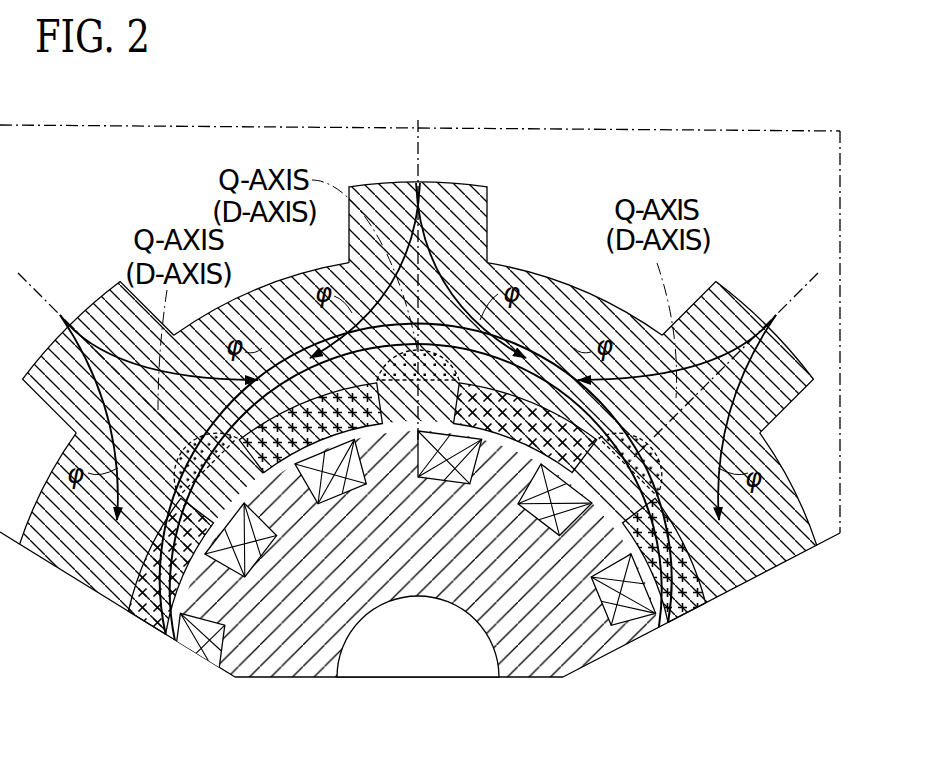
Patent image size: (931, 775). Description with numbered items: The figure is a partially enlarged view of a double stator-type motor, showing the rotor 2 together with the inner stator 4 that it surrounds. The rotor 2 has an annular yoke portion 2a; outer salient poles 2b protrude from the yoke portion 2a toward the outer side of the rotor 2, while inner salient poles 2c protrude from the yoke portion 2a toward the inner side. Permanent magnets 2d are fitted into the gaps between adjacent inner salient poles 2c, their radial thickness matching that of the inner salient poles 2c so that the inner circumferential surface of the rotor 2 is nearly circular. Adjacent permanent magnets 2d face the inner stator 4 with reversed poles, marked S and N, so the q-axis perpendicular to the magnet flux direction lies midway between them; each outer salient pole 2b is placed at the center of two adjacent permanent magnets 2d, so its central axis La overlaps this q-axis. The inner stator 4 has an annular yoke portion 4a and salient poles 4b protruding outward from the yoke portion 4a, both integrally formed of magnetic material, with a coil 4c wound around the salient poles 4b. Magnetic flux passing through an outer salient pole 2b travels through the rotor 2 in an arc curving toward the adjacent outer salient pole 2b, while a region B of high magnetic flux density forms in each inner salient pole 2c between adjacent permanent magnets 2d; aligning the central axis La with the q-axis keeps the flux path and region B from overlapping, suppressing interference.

The rotor 2 is at (537, 271).
The yoke portion 2a is at (274, 320).
The outer salient pole 2b is at (462, 200).
The inner salient pole 2c is at (246, 442).
The permanent magnet 2d is at (293, 407).
The inner stator 4 is at (614, 655).
The yoke portion 4a is at (418, 597).
The salient pole 4b is at (362, 468).
The coil 4c is at (432, 473).
The central axis La is at (418, 120).
The region having a high magnetic flux density B is at (440, 353).